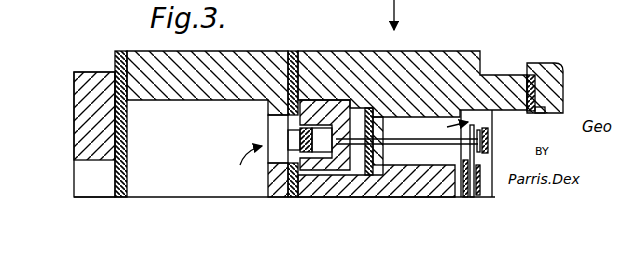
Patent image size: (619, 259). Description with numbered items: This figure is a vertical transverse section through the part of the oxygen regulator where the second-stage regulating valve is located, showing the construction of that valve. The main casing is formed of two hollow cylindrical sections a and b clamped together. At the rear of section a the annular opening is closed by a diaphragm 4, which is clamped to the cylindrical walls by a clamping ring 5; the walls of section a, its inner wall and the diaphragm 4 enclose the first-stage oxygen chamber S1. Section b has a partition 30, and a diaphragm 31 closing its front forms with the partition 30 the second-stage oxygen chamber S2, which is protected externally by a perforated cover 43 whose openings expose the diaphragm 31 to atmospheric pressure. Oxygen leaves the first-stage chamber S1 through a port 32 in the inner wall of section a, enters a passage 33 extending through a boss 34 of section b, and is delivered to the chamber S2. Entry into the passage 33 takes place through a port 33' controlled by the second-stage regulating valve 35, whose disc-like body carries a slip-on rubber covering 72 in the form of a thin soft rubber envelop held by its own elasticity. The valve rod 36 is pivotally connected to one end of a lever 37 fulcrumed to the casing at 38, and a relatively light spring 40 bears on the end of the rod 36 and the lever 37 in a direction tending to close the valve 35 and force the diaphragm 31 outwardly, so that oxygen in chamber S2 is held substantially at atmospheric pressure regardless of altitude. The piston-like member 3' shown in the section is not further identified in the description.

The clamping ring 5 is at (74, 100).
The diaphragm 4 is at (123, 199).
The casing section a is at (255, 55).
The casing section b is at (455, 60).
The passage 33 is at (354, 109).
The boss 34 is at (392, 192).
The partition 30 is at (452, 198).
The first-stage oxygen chamber S1 is at (226, 167).
The second-stage oxygen chamber S2 is at (490, 113).
The piston 3' is at (272, 170).
The port 32 is at (276, 125).
The second-stage regulating valve 35 is at (343, 112).
The slip-on rubber covering 72 is at (310, 108).
The port 33' is at (324, 177).
The lever 37 is at (478, 128).
The valve rod 36 is at (410, 144).
The spring 40 is at (487, 142).
The fulcrum 38 is at (473, 198).
The diaphragm 31 is at (550, 63).
The perforated cover 43 is at (558, 93).